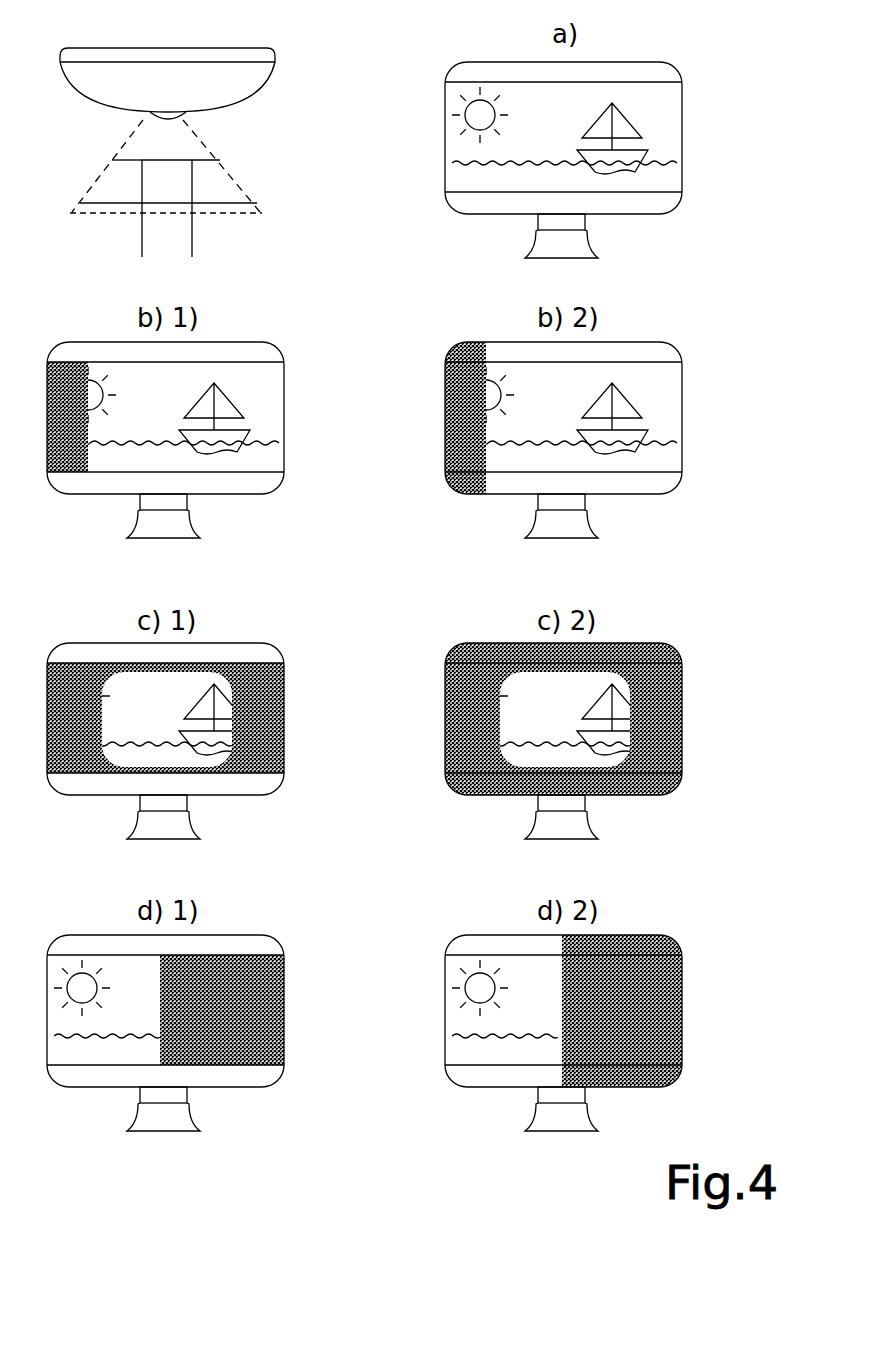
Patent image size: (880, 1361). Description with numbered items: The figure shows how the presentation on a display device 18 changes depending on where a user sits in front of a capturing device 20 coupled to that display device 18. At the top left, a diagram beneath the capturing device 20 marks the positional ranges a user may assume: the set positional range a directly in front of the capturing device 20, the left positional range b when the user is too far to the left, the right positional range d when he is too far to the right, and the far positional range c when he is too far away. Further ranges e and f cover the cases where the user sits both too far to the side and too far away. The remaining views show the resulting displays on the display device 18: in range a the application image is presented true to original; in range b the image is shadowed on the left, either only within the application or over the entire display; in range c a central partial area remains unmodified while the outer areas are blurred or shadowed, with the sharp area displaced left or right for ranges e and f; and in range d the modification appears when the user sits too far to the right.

The display device 18 is at (262, 78).
The capturing device 20 is at (190, 115).
The set positional range a is at (167, 208).
The left positional range b is at (126, 178).
The far positional range c is at (167, 225).
The right positional range d is at (206, 208).
The far left positional range e is at (111, 225).
The far right positional range f is at (224, 225).